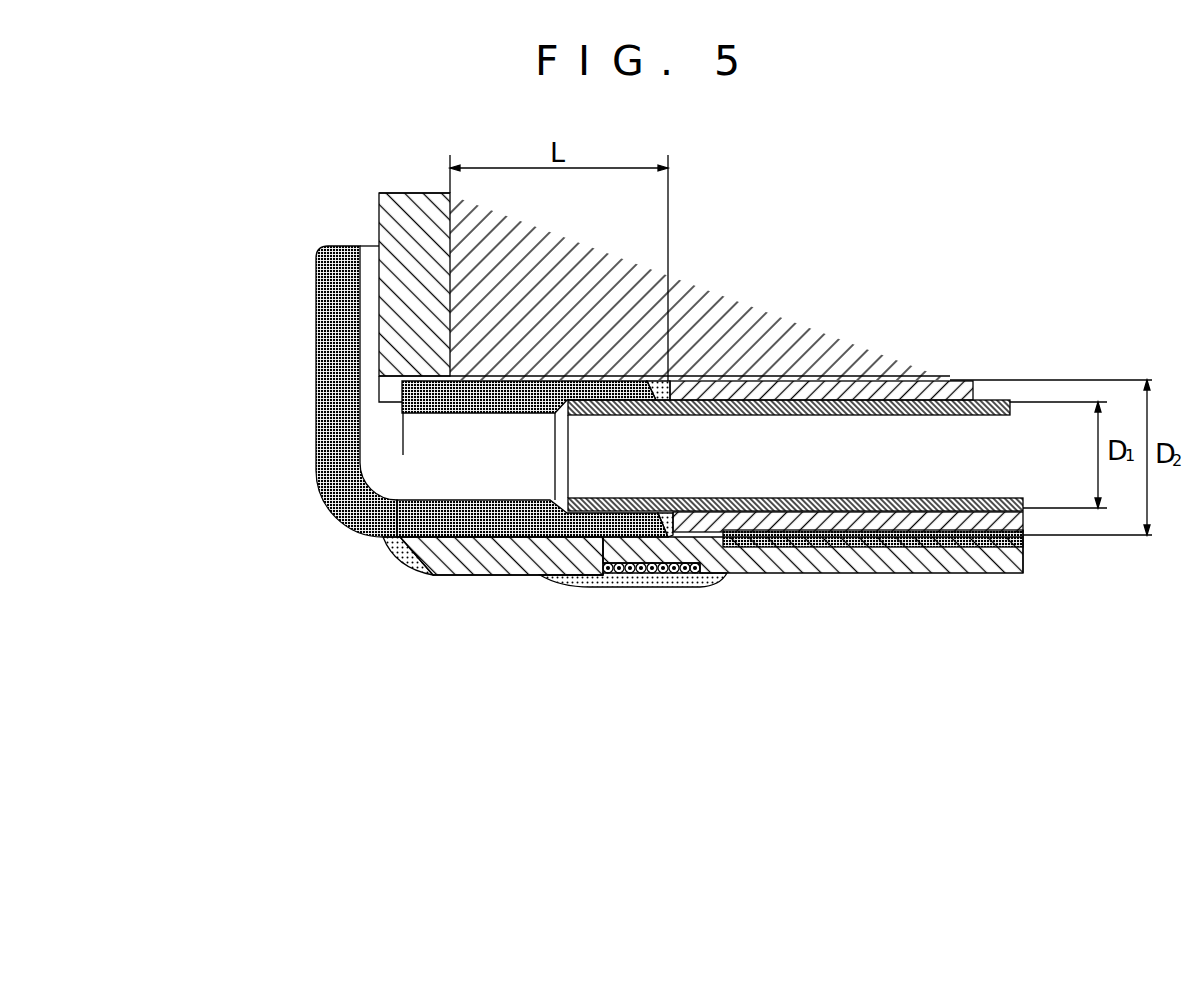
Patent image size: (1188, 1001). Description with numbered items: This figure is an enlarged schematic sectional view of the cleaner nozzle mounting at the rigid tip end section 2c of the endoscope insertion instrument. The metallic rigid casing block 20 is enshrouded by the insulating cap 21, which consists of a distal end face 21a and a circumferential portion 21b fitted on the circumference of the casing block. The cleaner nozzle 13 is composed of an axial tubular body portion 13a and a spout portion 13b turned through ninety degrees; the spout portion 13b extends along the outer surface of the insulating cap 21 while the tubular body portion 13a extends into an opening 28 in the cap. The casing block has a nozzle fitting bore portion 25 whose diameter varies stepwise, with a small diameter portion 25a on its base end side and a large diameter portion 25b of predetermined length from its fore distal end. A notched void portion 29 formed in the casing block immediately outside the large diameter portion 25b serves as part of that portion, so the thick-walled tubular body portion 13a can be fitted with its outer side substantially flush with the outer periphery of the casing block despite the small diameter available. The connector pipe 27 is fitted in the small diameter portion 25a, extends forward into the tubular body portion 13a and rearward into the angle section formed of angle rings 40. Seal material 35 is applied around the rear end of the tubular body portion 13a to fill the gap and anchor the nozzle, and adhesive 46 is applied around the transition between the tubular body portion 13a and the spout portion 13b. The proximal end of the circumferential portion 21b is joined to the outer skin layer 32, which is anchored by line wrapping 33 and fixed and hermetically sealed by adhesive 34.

The distal end portion 2c is at (540, 598).
The cleaner nozzle 13 is at (306, 400).
The tubular body portion 13a is at (517, 537).
The spout portion 13b is at (315, 277).
The rigid casing block 20 is at (623, 287).
The insulating cap 21 is at (462, 582).
The distal end face 21a is at (413, 240).
The circumferential portion 21b is at (573, 565).
The nozzle fitting bore portion 25 is at (770, 497).
The small diameter portion 25a is at (1007, 550).
The large diameter portion 25b is at (465, 381).
The connector pipe 27 is at (797, 398).
The opening 28 is at (330, 512).
The notched void portion 29 is at (697, 568).
The outer skin layer 32 is at (948, 557).
The line wrapping 33 is at (637, 578).
The adhesive 34 is at (673, 587).
The seal material 35 is at (670, 378).
The angle ring 40 is at (913, 503).
The adhesive 46 is at (397, 560).